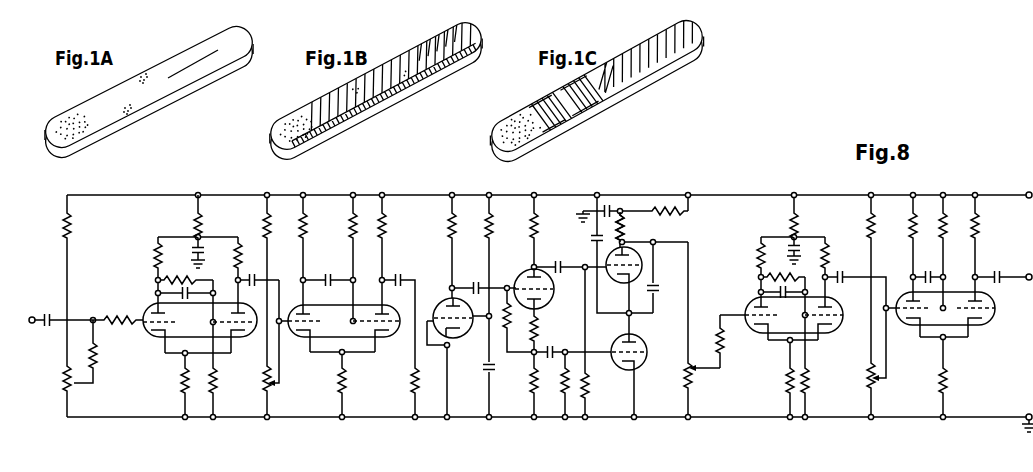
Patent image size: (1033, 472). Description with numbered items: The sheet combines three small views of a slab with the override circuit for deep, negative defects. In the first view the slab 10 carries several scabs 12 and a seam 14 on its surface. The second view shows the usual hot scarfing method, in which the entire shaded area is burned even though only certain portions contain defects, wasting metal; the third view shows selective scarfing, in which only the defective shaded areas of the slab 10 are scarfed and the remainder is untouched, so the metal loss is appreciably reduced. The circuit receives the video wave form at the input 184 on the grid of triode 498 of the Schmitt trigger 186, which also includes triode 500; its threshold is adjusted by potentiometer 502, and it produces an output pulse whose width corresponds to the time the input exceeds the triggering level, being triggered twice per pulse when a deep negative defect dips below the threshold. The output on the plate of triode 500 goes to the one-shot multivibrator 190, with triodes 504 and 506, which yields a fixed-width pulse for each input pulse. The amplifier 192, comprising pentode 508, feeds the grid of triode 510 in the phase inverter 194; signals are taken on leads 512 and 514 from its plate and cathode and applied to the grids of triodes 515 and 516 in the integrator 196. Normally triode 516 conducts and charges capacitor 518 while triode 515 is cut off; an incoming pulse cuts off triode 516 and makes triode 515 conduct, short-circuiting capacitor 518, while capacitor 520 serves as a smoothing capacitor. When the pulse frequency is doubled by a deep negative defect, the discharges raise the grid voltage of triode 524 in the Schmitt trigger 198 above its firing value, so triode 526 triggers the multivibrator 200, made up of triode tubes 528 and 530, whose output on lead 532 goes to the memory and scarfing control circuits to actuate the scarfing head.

In FIG. 1A, the slab 10 is at (198, 43).
In FIG. 1B, the slab 10 is at (473, 44).
In FIG. 1C, the slab 10 is at (690, 42).
In FIG. 1A, the scabs 12 is at (145, 72).
In FIG. 1A, the seam 14 is at (188, 68).
In FIG. 8, the input signal lead 184 is at (79, 318).
In FIG. 8, the Schmitt trigger 186 is at (214, 190).
In FIG. 8, the one-shot multivibrator 190 is at (358, 190).
In FIG. 8, the amplifier 192 is at (463, 190).
In FIG. 8, the phase inverter 194 is at (549, 190).
In FIG. 8, the integrator 196 is at (641, 190).
In FIG. 8, the Schmitt trigger 198 is at (814, 190).
In FIG. 8, the multivibrator 200 is at (959, 190).
In FIG. 8, the triode 498 is at (156, 340).
In FIG. 8, the triode 500 is at (245, 340).
In FIG. 8, the potentiometer 502 is at (70, 385).
In FIG. 8, the triode 504 is at (298, 343).
In FIG. 8, the triode 506 is at (394, 337).
In FIG. 8, the pentode 508 is at (466, 333).
In FIG. 8, the triode 510 is at (546, 302).
In FIG. 8, the lead 512 is at (569, 264).
In FIG. 8, the lead 514 is at (580, 350).
In FIG. 8, the triode 515 is at (636, 250).
In FIG. 8, the triode 516 is at (638, 366).
In FIG. 8, the capacitor 518 is at (594, 238).
In FIG. 8, the smoothing capacitor 520 is at (657, 292).
In FIG. 8, the triode 524 is at (753, 304).
In FIG. 8, the triode 526 is at (836, 329).
In FIG. 8, the triode tube 528 is at (912, 329).
In FIG. 8, the triode tube 530 is at (987, 326).
In FIG. 8, the lead 532 is at (1011, 272).